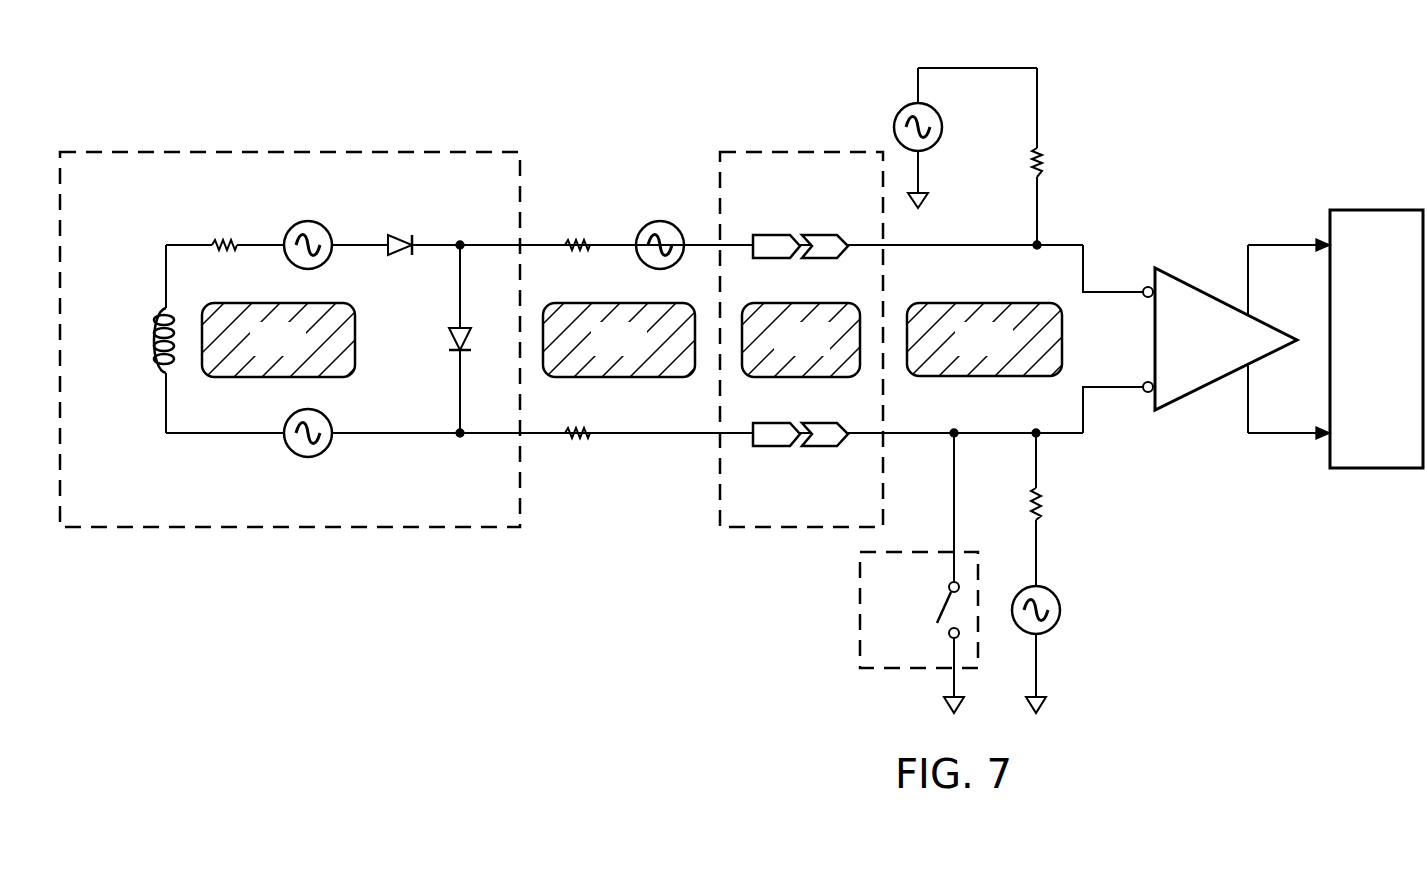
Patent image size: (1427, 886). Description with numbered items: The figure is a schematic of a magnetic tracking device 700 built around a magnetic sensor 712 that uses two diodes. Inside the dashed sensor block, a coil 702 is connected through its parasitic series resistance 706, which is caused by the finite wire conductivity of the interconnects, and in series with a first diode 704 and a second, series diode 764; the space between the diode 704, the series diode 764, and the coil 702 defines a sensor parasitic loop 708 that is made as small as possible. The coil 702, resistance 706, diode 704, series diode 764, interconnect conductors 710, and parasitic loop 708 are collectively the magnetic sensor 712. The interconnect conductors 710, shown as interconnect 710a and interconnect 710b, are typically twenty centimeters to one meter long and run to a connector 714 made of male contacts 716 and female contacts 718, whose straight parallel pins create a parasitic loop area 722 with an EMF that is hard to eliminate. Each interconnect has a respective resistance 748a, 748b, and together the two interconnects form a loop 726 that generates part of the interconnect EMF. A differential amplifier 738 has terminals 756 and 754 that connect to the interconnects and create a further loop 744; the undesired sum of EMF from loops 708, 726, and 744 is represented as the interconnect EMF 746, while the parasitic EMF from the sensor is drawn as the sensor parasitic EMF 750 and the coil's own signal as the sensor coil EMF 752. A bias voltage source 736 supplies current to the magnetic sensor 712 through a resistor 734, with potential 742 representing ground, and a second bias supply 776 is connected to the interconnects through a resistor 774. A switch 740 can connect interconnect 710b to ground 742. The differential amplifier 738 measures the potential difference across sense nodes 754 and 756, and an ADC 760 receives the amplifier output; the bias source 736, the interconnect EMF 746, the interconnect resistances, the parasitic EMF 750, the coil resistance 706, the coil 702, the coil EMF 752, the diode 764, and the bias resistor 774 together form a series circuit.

The magnetic tracking device 700 is at (542, 80).
The coil 702 is at (157, 340).
The first diode 704 is at (448, 340).
The parasitic series resistance 706 is at (227, 240).
The sensor parasitic loop 708 is at (300, 353).
The interconnect conductors 710 is at (223, 435).
The interconnect 710a is at (483, 243).
The interconnect 710b is at (488, 437).
The magnetic sensor 712 is at (234, 150).
The connector 714 is at (817, 152).
The male contacts 716 is at (777, 233).
The female contacts 718 is at (823, 233).
The parasitic loop area 722 is at (823, 353).
The loop 726 is at (641, 353).
The resistor 734 is at (1043, 162).
The bias voltage source 736 is at (944, 127).
The differential amplifier 738 is at (1221, 353).
The switch 740 is at (940, 602).
The ground 742 is at (928, 200).
The loop 744 is at (1005, 354).
The interconnect EMF 746 is at (658, 222).
The resistance 748a is at (572, 240).
The resistance 748b is at (573, 440).
The sensor parasitic EMF 750 is at (307, 222).
The sensor coil EMF 752 is at (307, 457).
The sense node 754 is at (1145, 392).
The sense node 756 is at (1145, 288).
The ADC 760 is at (1398, 375).
The second diode 764 is at (403, 235).
The resistor 774 is at (1043, 510).
The second bias supply 776 is at (1060, 612).